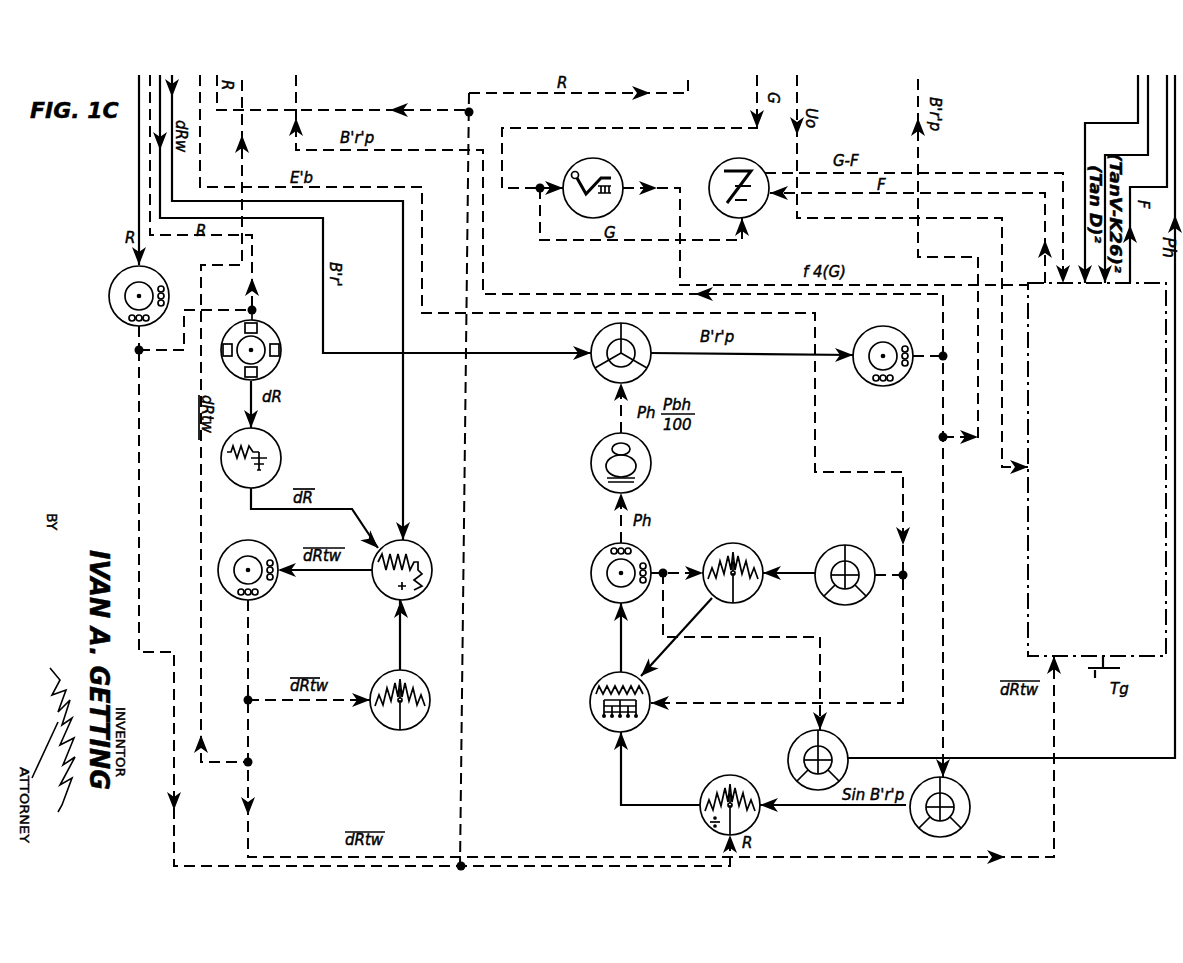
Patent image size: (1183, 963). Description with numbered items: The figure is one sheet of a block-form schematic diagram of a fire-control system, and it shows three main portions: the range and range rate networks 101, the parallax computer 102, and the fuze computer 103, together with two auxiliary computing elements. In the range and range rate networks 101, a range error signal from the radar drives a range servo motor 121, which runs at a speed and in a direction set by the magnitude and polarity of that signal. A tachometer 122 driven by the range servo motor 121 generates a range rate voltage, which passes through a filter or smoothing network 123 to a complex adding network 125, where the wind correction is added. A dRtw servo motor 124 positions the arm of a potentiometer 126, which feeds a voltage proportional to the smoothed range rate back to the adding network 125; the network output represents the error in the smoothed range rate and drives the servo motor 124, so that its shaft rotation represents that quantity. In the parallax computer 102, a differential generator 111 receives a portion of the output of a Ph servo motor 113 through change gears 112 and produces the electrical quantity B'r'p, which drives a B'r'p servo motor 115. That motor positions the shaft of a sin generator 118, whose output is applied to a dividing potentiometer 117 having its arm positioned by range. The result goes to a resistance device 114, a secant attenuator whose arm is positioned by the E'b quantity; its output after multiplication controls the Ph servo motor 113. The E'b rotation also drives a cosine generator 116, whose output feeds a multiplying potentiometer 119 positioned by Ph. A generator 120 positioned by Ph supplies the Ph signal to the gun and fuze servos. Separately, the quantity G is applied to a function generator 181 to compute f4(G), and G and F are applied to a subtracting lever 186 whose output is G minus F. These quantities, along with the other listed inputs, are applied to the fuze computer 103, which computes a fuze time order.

The range and range rate networks 101 is at (297, 717).
The parallax computer 102 is at (600, 769).
The fuze computer 103 is at (1086, 517).
The differential generator 111 is at (645, 375).
The change gears 112 is at (652, 461).
The Ph servo motor 113 is at (637, 548).
The resistance device 114 is at (600, 678).
The B'r'p servo motor 115 is at (861, 378).
The cosine generator 116 is at (835, 546).
The dividing potentiometer 117 is at (728, 776).
The sin generator 118 is at (915, 781).
The multiplying potentiometer 119 is at (745, 548).
The generator 120 is at (840, 740).
The range servo motor 121 is at (127, 320).
The tachometer 122 is at (276, 370).
The filter or smoothing network 123 is at (281, 456).
The dRtw servo motor 124 is at (270, 548).
The complex adding network 125 is at (420, 549).
The potentiometer 126 is at (388, 673).
The function generator 181 is at (592, 160).
The subtracting lever 186 is at (735, 160).